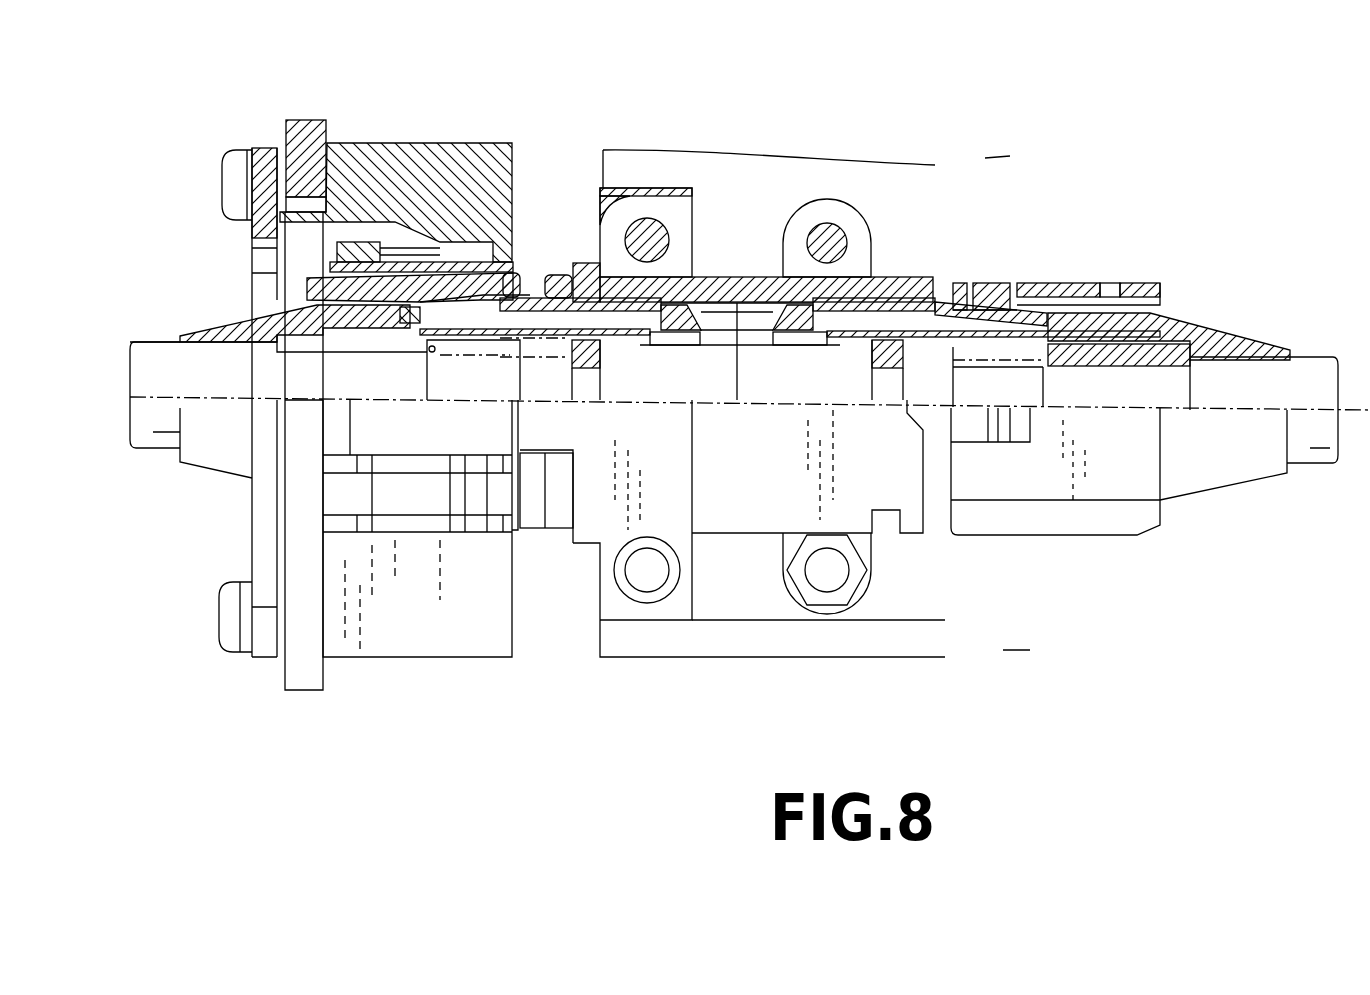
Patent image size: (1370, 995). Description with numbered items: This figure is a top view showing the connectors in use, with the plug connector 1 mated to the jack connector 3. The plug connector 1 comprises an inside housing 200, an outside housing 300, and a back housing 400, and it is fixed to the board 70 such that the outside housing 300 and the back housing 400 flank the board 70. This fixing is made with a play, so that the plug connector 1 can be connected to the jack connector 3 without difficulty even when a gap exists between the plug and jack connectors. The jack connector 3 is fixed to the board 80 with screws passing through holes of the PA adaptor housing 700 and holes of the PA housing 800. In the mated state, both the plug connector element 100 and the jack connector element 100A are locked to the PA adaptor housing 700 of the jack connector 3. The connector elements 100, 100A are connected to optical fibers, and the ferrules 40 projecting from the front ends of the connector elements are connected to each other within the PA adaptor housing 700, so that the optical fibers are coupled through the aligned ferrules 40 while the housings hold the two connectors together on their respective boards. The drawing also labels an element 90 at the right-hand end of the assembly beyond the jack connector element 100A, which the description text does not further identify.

The plug connector 1 is at (428, 577).
The jack connector 3 is at (750, 565).
The ferrules 40 is at (752, 360).
The board 70 is at (320, 118).
The board 80 is at (747, 635).
The tapered collet 90 is at (1247, 363).
The plug connector element 100 is at (222, 463).
The jack connector element 100A is at (1127, 482).
The inside housing 200 is at (370, 255).
The outside housing 300 is at (495, 143).
The back housing 400 is at (265, 578).
The PA adaptor housing 700 is at (863, 488).
The PA housing 800 is at (537, 553).